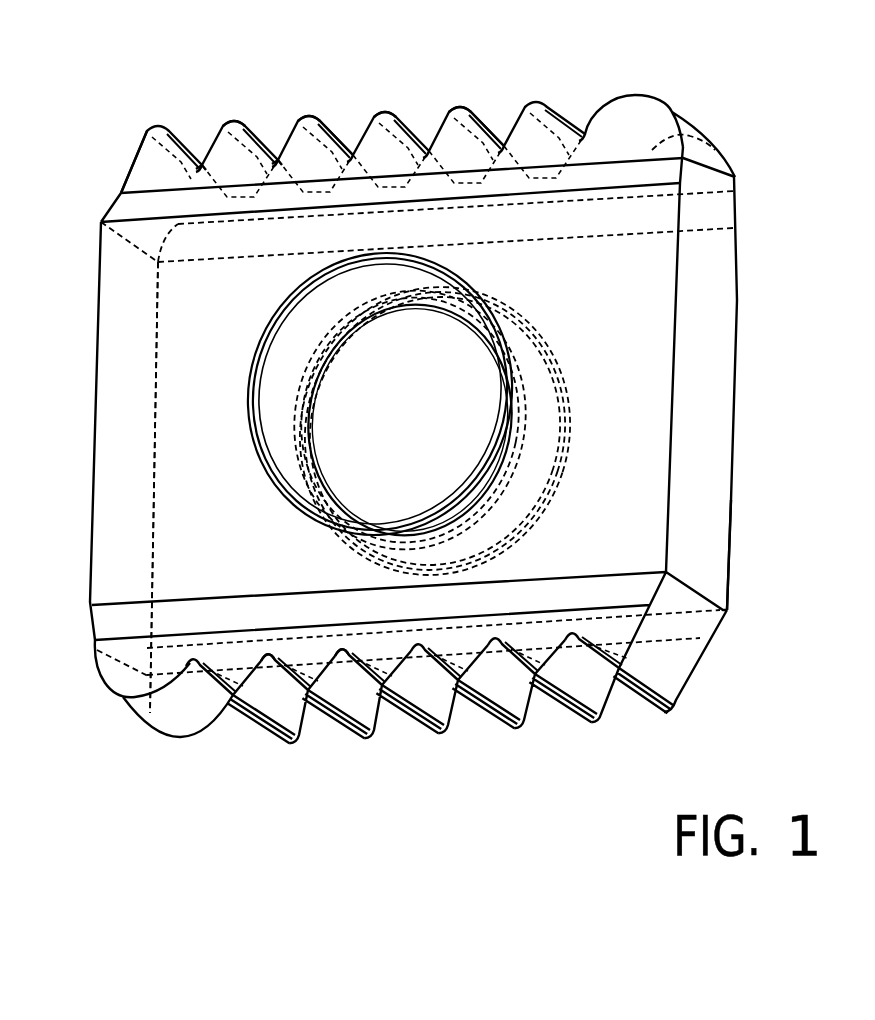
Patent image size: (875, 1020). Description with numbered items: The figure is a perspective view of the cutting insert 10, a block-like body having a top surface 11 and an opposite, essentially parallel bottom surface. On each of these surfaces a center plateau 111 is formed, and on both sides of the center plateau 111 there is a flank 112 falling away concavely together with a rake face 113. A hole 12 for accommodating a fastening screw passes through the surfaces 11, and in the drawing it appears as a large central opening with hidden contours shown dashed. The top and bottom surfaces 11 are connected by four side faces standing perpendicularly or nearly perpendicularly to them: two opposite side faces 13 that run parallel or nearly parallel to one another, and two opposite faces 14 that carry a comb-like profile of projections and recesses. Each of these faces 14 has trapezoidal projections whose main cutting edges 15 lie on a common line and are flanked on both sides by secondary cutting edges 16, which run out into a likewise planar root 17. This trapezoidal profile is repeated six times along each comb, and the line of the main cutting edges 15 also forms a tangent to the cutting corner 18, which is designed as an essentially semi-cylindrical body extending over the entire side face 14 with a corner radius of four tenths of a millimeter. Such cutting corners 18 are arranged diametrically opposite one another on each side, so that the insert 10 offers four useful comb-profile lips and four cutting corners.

The cutting insert 10 is at (790, 611).
The top surface 11 is at (640, 402).
The hole 12 is at (396, 433).
The side face 13 is at (710, 510).
The face formed with projections and recesses 14 is at (547, 93).
The main cutting edge 15 is at (306, 117).
The secondary cutting edge 16 is at (354, 151).
The root 17 is at (276, 166).
The cutting corner 18 is at (667, 106).
The center plateau 111 is at (175, 475).
The flank 112 is at (670, 178).
The rake face 113 is at (157, 168).